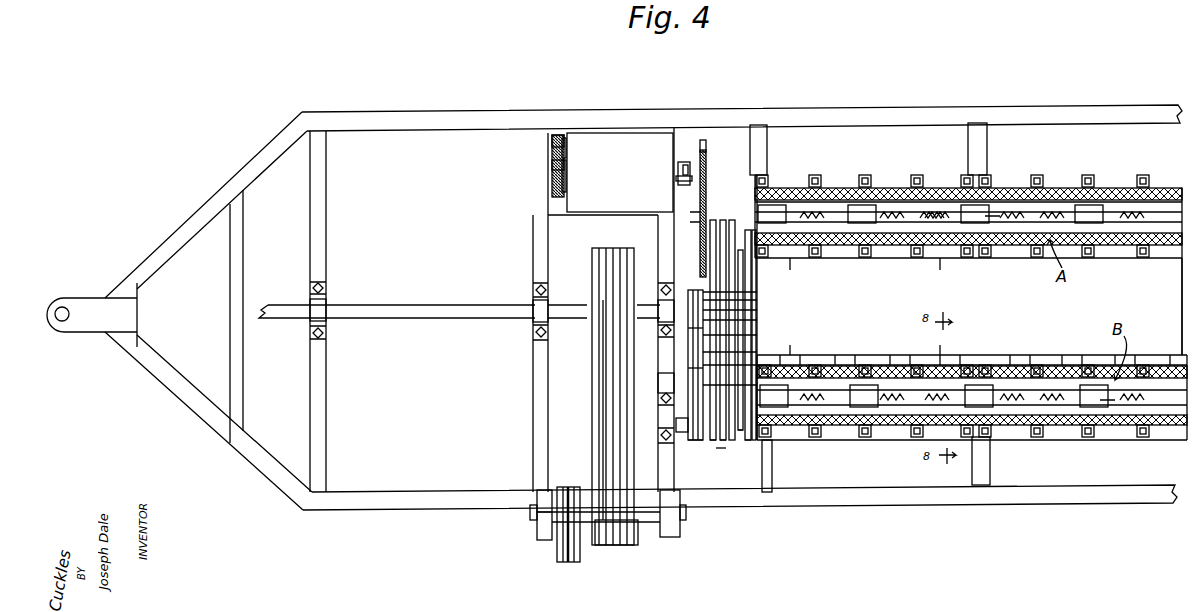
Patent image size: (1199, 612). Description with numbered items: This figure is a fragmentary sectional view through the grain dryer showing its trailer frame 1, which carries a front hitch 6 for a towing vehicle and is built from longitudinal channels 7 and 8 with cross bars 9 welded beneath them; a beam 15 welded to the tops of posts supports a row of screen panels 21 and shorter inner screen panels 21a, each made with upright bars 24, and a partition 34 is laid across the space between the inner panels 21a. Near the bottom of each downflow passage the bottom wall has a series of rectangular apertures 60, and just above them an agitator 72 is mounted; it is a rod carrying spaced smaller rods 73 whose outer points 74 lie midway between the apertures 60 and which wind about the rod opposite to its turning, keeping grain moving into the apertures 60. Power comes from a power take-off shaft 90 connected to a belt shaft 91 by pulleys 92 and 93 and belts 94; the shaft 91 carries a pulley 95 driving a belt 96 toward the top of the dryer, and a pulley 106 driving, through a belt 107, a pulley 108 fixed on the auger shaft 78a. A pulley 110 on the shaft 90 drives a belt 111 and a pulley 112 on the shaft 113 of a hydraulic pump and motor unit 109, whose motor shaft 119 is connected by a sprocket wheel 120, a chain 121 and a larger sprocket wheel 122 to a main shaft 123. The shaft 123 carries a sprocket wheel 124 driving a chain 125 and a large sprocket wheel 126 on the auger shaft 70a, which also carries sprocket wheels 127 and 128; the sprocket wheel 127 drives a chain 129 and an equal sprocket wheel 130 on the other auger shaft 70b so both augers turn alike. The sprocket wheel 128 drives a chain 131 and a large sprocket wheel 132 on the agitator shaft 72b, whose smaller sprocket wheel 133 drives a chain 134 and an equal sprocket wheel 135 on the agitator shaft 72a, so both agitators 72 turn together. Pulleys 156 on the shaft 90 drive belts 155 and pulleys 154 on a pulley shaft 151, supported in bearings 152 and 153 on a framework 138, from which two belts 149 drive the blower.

The trailer frame 1 is at (454, 100).
The front hitch 6 is at (105, 330).
The channel 7 is at (346, 510).
The channel 8 is at (365, 113).
The cross bar 9 is at (987, 140).
The beam 15 is at (557, 548).
The screen panel 21 is at (893, 173).
The inner screen panel 21a is at (948, 258).
The upright bar 24 is at (862, 178).
The partition 34 is at (1084, 306).
The rectangular aperture 60 is at (865, 208).
The auger shaft 70a is at (740, 271).
The auger shaft 70b is at (735, 385).
The agitator 72 is at (930, 215).
The agitator shaft 72a is at (752, 230).
The agitator shaft 72b is at (712, 440).
The smaller rod 73 is at (995, 222).
The outer point 74 is at (838, 220).
The auger shaft 78a is at (740, 302).
The power take-off shaft 90 is at (406, 312).
The belt shaft 91 is at (676, 425).
The pulley 92 is at (688, 328).
The pulley 93 is at (688, 440).
The belt 94 is at (703, 368).
The pulley 95 is at (748, 450).
The belt 96 is at (724, 440).
The pulley 106 is at (757, 440).
The belt 107 is at (735, 325).
The pulley 108 is at (745, 290).
The hydraulic pump and motor unit 109 is at (620, 172).
The pulley 110 is at (688, 292).
The belt 111 is at (680, 180).
The pulley 112 is at (680, 162).
The shaft 113 is at (681, 170).
The motor shaft 119 is at (565, 172).
The sprocket wheel 120 is at (552, 186).
The chain 121 is at (552, 165).
The larger sprocket wheel 122 is at (552, 145).
The main shaft 123 is at (565, 153).
The sprocket wheel 124 is at (706, 140).
The chain 125 is at (700, 186).
The large sprocket wheel 126 is at (690, 217).
The sprocket wheel 127 is at (730, 220).
The sprocket wheel 128 is at (720, 220).
The chain 129 is at (783, 270).
The sprocket wheel 130 is at (745, 355).
The chain 131 is at (700, 265).
The large sprocket wheel 132 is at (718, 450).
The smaller sprocket wheel 133 is at (740, 440).
The chain 134 is at (740, 331).
The sprocket wheel 135 is at (745, 230).
The framework 138 is at (537, 487).
The belt 149 is at (574, 568).
The pulley shaft 151 is at (587, 525).
The bearing 152 is at (678, 537).
The bearing 153 is at (537, 530).
The pulley 154 is at (637, 545).
The belt 155 is at (622, 415).
The pulley 156 is at (592, 252).